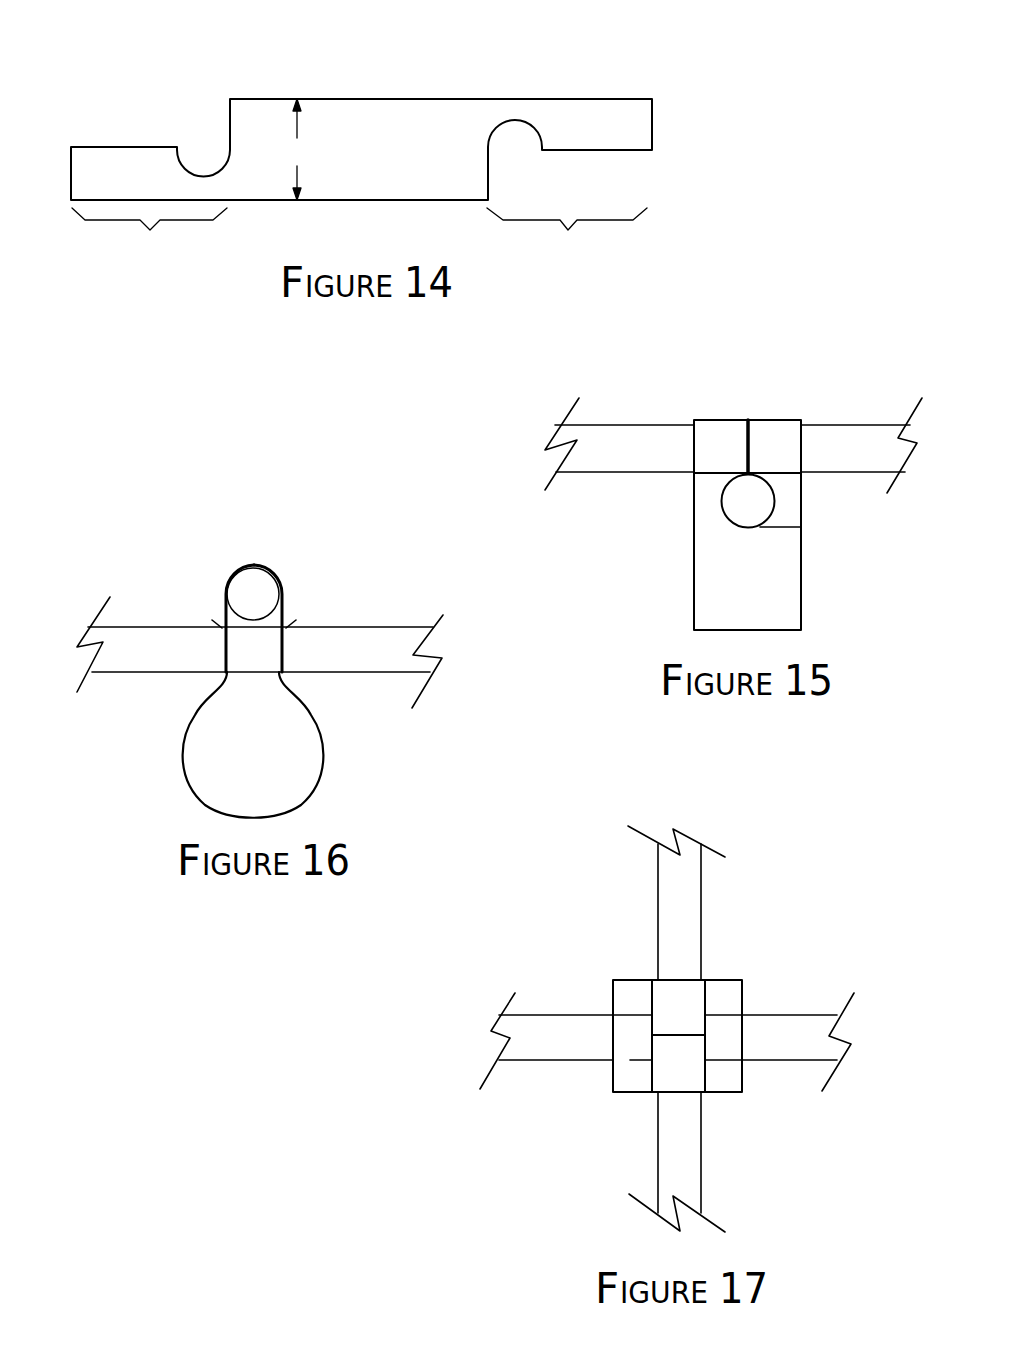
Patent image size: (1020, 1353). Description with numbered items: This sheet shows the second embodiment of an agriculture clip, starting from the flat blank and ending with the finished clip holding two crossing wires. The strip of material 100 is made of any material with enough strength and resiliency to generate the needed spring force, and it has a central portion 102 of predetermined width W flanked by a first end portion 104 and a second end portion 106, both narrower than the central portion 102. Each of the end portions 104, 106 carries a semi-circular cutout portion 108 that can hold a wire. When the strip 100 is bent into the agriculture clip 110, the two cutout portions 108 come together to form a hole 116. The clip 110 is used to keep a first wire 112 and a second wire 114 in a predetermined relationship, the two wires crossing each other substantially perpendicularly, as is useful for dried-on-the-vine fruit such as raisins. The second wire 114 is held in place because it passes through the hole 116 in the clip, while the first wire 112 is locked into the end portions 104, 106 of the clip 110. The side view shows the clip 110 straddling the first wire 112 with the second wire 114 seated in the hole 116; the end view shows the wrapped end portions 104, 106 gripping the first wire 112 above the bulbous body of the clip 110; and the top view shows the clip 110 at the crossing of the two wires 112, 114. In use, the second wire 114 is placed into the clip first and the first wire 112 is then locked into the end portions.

In FIG. 14, the strip of material 100 is at (542, 99).
In FIG. 14, the central portion 102 is at (358, 143).
In FIG. 14, the first end portion 104 is at (149, 237).
In FIG. 16, the first end portion 104 is at (226, 572).
In FIG. 14, the second end portion 106 is at (567, 238).
In FIG. 16, the second end portion 106 is at (272, 567).
In FIG. 14, the semi-circular cutout portion 108 is at (207, 150).
In FIG. 15, the agriculture clip 110 is at (783, 402).
In FIG. 16, the agriculture clip 110 is at (327, 746).
In FIG. 17, the agriculture clip 110 is at (727, 996).
In FIG. 15, the first wire 112 is at (657, 442).
In FIG. 16, the first wire 112 is at (248, 596).
In FIG. 17, the first wire 112 is at (680, 922).
In FIG. 15, the second wire 114 is at (740, 494).
In FIG. 16, the second wire 114 is at (178, 650).
In FIG. 17, the second wire 114 is at (527, 1046).
In FIG. 15, the hole 116 is at (775, 500).